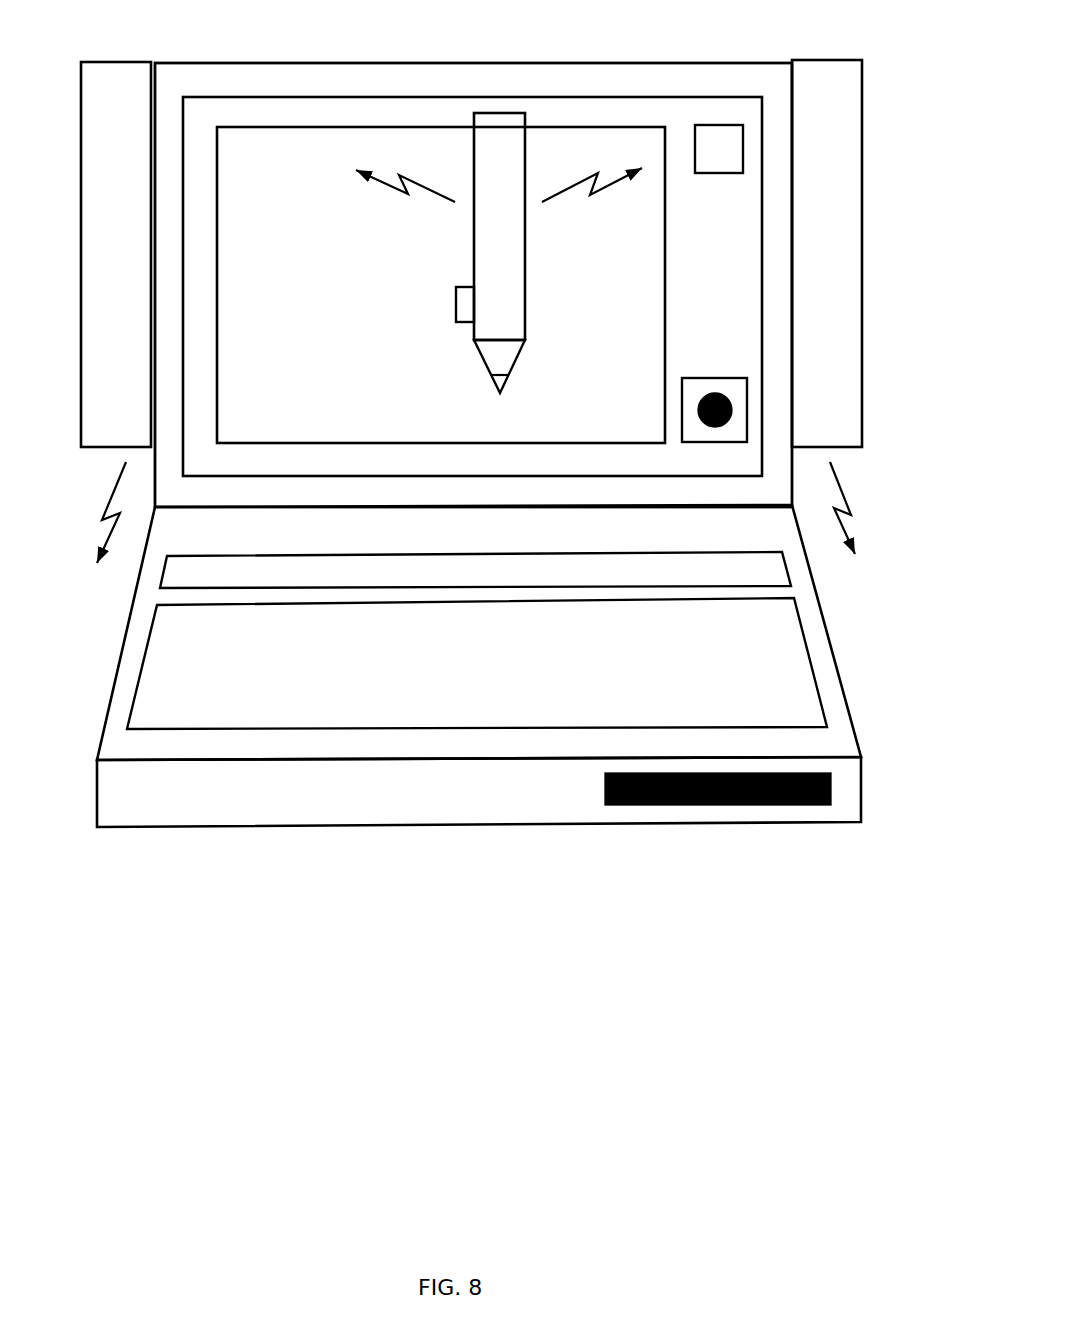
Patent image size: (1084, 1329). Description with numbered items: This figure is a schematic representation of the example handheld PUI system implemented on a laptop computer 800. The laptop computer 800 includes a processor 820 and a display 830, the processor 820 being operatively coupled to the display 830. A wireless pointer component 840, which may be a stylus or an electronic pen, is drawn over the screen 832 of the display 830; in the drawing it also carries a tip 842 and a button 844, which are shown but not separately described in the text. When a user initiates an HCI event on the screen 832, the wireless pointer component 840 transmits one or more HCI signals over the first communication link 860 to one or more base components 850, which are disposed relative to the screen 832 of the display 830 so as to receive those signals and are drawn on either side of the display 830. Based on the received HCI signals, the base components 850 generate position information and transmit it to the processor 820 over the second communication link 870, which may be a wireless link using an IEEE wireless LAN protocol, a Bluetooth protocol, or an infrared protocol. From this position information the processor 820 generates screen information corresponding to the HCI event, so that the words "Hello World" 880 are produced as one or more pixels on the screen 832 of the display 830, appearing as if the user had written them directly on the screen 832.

The laptop computer 800 is at (468, 1227).
The processor 820 is at (479, 812).
The display 830 is at (473, 262).
The screen 832 is at (482, 284).
The wireless pointer component 840 is at (451, 226).
The pointer tip 842 is at (543, 389).
The pointer button 844 is at (417, 299).
The base components 850 is at (500, 230).
The first communication link 860 is at (465, 209).
The second communication link 870 is at (487, 543).
The "Hello World" 880 is at (354, 349).